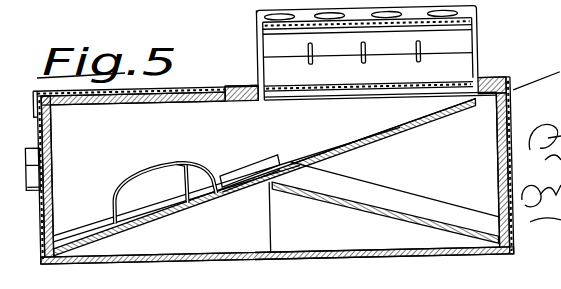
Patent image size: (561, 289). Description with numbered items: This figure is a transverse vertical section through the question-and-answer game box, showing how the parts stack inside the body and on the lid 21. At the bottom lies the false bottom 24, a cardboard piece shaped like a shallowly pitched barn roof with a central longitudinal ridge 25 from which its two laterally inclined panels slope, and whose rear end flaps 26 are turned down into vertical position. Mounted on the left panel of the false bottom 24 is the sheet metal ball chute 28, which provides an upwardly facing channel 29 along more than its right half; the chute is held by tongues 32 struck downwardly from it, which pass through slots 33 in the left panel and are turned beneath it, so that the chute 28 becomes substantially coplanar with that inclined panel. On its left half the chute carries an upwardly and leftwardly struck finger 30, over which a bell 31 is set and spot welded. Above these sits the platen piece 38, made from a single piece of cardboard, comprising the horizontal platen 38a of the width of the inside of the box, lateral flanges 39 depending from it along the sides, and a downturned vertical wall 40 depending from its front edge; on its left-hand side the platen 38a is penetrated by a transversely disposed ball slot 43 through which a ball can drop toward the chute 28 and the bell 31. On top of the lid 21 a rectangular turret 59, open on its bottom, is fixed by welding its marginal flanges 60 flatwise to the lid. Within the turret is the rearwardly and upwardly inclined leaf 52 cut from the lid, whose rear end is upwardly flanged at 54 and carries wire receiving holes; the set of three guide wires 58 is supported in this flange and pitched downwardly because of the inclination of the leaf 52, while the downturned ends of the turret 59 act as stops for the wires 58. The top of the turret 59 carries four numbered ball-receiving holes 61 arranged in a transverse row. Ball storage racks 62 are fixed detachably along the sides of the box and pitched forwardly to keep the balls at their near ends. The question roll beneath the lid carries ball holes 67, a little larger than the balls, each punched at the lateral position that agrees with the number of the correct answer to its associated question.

The lid 21 is at (207, 86).
The false bottom 24 is at (91, 218).
The central longitudinal ridge 25 is at (270, 206).
The rear end flaps 26 is at (314, 223).
The ball chute 28 is at (428, 128).
The upwardly facing channel 29 is at (356, 142).
The finger 30 is at (188, 164).
The bell 31 is at (120, 184).
The tongues 32 is at (250, 198).
The slots 33 is at (232, 209).
The platen piece 38 is at (206, 101).
The horizontal platen 38a is at (138, 104).
The lateral flanges 39 is at (53, 147).
The downturned vertical wall 40 is at (363, 115).
The ball slot 43 is at (277, 101).
The leaf 52 is at (459, 67).
The upward flange 54 is at (271, 44).
The guide wires 58 is at (366, 66).
The turret 59 is at (326, 16).
The marginal flanges 60 is at (235, 84).
The ball-receiving holes 61 is at (384, 14).
The ball storage racks 62 is at (33, 187).
The ball holes 67 is at (302, 98).